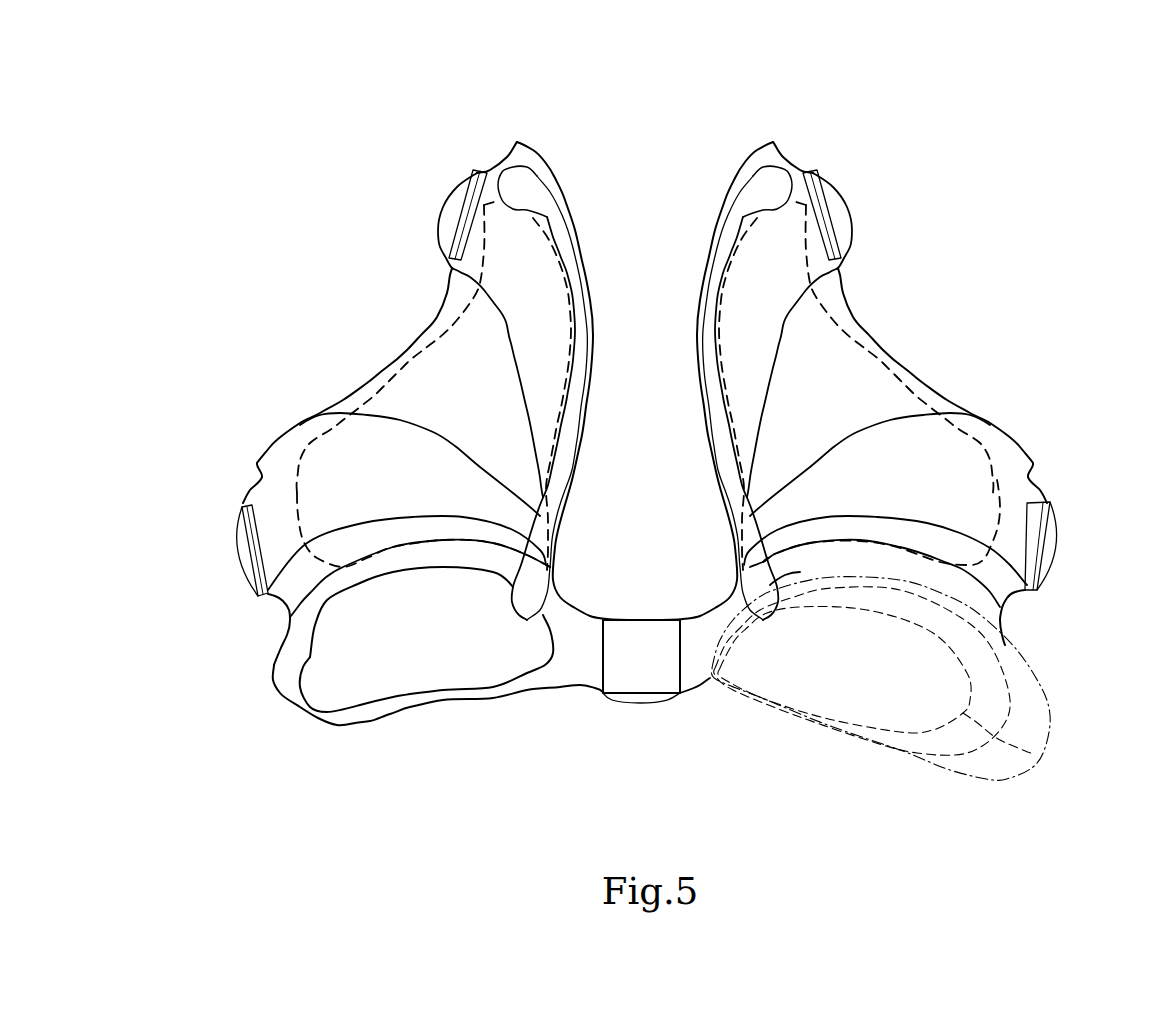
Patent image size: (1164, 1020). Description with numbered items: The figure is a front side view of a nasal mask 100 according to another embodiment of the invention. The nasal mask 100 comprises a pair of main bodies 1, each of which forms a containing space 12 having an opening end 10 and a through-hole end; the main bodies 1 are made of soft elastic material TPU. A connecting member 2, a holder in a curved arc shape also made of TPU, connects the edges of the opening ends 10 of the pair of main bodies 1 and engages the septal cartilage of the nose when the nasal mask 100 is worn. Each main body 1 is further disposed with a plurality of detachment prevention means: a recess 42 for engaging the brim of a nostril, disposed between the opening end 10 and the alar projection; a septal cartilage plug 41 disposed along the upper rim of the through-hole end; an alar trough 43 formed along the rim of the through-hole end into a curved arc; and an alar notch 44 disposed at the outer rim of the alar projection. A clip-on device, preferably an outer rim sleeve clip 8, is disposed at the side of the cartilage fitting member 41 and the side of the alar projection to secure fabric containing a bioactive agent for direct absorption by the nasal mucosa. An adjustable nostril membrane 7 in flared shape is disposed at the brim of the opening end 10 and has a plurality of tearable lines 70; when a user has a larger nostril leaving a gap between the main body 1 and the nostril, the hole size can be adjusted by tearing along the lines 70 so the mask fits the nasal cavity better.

The nasal mask 100 is at (1000, 98).
The main body 1 is at (547, 173).
The septal cartilage plug 41 is at (513, 160).
The outer rim sleeve clip 8 is at (470, 217).
The containing space 12 is at (452, 378).
The alar trough 43 is at (360, 386).
The alar notch 44 is at (250, 487).
The recess 42 is at (287, 613).
The opening end 10 is at (412, 675).
The connecting member 2 is at (643, 672).
The adjustable nostril membrane 7 is at (1035, 700).
The tearable lines 70 is at (885, 722).